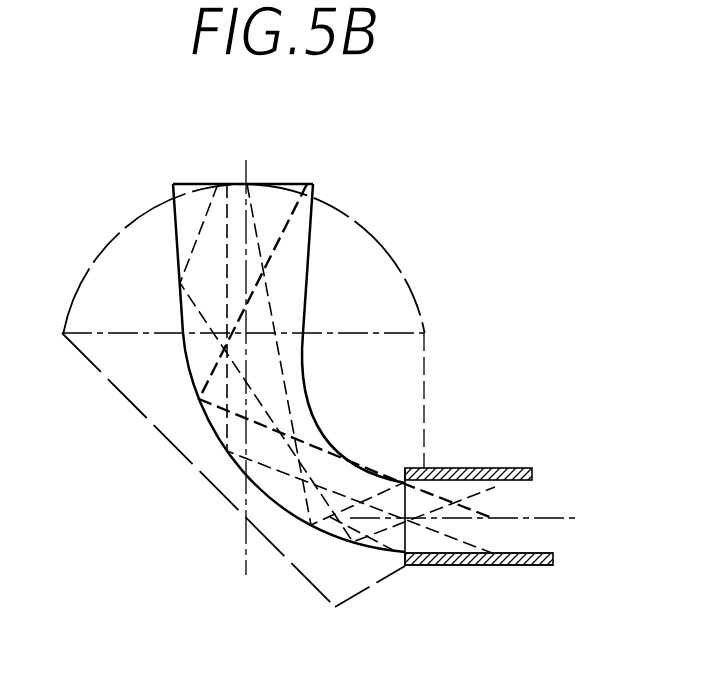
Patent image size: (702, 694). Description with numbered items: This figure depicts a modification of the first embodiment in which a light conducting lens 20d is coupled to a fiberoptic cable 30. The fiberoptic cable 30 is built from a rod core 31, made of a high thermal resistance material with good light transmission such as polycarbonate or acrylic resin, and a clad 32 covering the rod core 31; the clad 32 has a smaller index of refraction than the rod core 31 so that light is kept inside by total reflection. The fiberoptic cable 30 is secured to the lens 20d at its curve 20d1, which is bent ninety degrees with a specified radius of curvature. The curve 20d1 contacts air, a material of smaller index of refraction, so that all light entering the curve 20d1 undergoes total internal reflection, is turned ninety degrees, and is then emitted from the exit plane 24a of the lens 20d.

The exit plane 24a is at (260, 184).
The light conducting lens 20d is at (293, 282).
The curve 20d1 is at (300, 438).
The fiberoptic cable 30 is at (510, 460).
The rod core 31 is at (527, 543).
The clad 32 is at (475, 566).